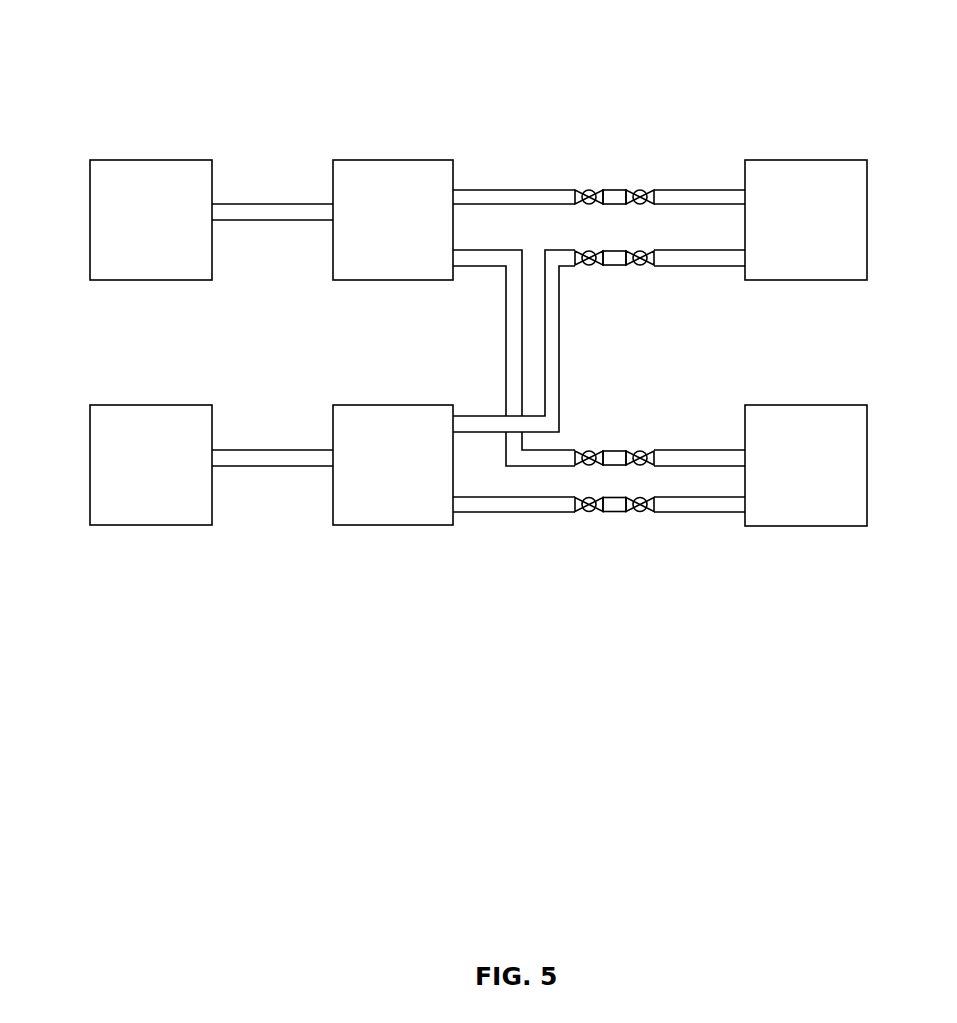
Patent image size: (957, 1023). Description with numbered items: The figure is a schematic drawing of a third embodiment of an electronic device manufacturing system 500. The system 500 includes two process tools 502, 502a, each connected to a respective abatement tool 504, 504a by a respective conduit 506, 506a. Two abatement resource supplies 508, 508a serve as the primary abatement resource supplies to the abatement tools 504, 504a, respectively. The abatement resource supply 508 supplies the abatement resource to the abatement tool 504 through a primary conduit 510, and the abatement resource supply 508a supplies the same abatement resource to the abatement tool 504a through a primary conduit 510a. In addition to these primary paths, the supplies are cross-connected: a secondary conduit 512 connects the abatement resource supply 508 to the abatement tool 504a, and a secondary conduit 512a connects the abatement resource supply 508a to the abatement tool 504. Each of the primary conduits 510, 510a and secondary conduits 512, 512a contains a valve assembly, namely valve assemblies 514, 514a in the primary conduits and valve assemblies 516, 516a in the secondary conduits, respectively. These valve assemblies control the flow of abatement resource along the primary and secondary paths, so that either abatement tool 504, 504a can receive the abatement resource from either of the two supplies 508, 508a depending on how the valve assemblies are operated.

The electronic device manufacturing system 500 is at (423, 72).
The process tool 502 is at (150, 158).
The process tool 502a is at (150, 403).
The abatement tool 504 is at (392, 158).
The abatement tool 504a is at (392, 403).
The conduit 506 is at (272, 202).
The conduit 506a is at (288, 448).
The abatement resource supply 508 is at (807, 158).
The abatement resource supply 508a is at (830, 403).
The primary conduit 510 is at (727, 186).
The primary conduit 510a is at (697, 513).
The secondary conduit 512 is at (559, 312).
The secondary conduit 512a is at (505, 348).
The valve assembly 514 is at (610, 175).
The valve assembly 514a is at (622, 537).
The valve assembly 516 is at (616, 277).
The valve assembly 516a is at (613, 443).